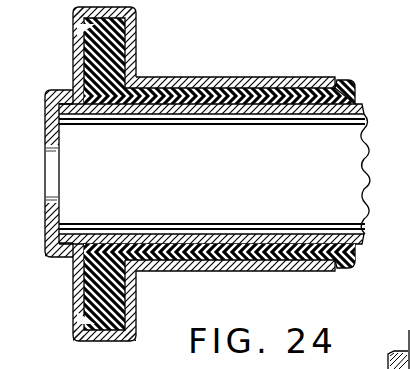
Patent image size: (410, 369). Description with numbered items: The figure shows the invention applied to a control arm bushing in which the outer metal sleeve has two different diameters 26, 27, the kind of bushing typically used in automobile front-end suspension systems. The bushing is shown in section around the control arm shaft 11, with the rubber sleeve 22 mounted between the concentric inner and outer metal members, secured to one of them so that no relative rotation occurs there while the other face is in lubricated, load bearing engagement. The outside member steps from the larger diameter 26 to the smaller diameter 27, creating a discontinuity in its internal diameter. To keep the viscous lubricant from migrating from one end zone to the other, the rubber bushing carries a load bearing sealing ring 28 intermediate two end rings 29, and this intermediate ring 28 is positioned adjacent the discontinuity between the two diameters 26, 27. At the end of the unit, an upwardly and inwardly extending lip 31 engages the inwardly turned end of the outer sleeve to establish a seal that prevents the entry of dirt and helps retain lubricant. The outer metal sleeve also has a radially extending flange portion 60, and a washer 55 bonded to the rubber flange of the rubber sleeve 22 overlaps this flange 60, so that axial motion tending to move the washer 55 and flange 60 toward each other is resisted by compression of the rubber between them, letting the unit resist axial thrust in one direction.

The control arm shaft 11 is at (367, 152).
The rubber sleeve 22 is at (146, 92).
The first diameter of outside metal member 26 is at (214, 77).
The second diameter of outside metal member 27 is at (298, 78).
The load bearing sealing ring 28 is at (227, 264).
The end rings 29 is at (150, 260).
The lip 31 is at (356, 88).
The washer 55 is at (46, 222).
The flange portion 60 is at (134, 41).